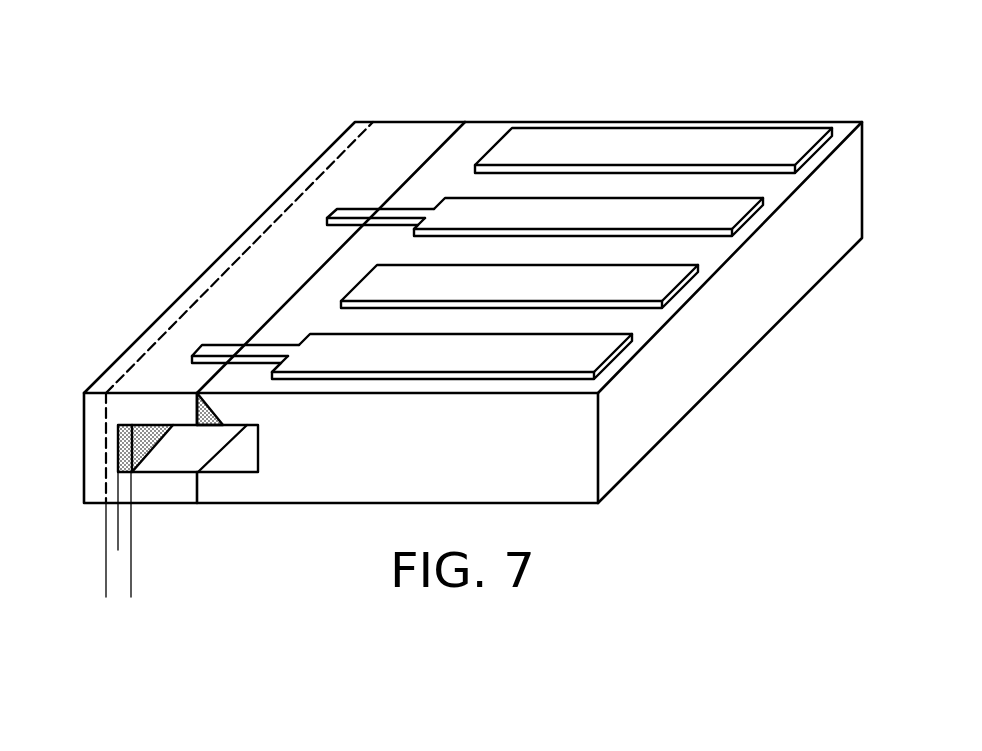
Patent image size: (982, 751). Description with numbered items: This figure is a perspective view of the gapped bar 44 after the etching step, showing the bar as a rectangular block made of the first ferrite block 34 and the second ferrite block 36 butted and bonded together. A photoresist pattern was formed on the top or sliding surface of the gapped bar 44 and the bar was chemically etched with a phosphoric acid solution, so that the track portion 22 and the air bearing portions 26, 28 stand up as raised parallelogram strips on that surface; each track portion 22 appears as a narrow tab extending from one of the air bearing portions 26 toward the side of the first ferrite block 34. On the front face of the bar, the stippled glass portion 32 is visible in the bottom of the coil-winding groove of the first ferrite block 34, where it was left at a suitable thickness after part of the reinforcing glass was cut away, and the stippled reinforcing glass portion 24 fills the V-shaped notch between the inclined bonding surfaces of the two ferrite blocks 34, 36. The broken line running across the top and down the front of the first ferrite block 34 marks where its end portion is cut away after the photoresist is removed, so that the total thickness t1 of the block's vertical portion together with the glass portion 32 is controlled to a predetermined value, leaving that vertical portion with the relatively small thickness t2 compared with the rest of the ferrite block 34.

The gapped bar 44 is at (471, 281).
The first ferrite block 34 is at (403, 122).
The second ferrite block 36 is at (516, 239).
The air bearing portion 28 is at (795, 147).
The air bearing portion 26 is at (722, 220).
The track portion 22 is at (352, 210).
The glass portion 32 is at (117, 448).
The reinforcing glass portion 24 is at (203, 425).
The total thickness t1 is at (148, 587).
The thickness of vertical portion t2 is at (148, 543).